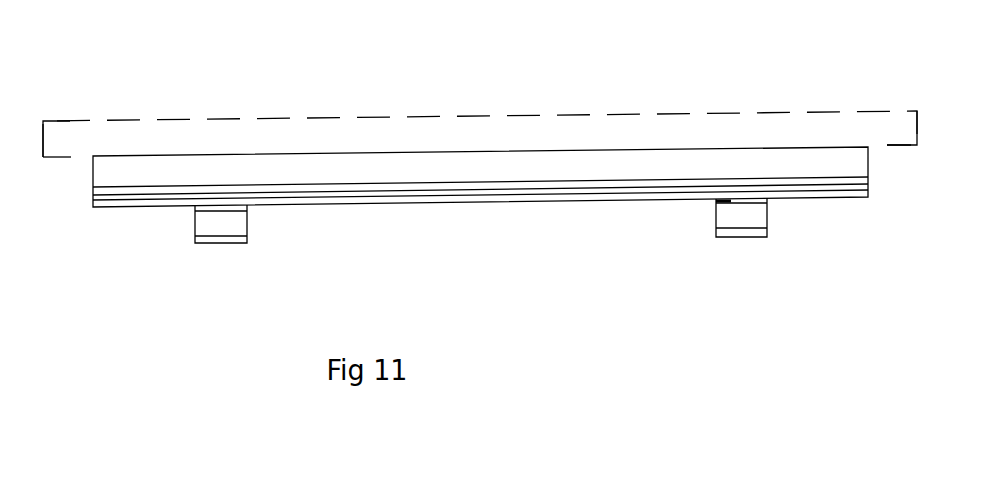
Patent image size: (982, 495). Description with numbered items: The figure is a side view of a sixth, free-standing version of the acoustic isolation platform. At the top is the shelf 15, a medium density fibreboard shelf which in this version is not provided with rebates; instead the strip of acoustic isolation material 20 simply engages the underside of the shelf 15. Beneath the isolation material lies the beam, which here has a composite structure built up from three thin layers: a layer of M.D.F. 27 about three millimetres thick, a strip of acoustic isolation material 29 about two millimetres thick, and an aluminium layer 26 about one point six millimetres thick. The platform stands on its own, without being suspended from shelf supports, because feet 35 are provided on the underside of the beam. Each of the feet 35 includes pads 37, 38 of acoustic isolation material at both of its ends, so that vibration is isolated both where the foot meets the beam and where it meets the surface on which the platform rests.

The shelf 15 is at (349, 137).
The acoustic isolation material 20 is at (634, 165).
The layer of M.D.F. 27 is at (313, 184).
The strip of acoustic isolation material 29 is at (395, 195).
The aluminium layer 26 is at (470, 203).
The feet 35 is at (750, 213).
The pad of acoustic isolation material 37 is at (743, 233).
The pad of acoustic isolation material 38 is at (728, 202).